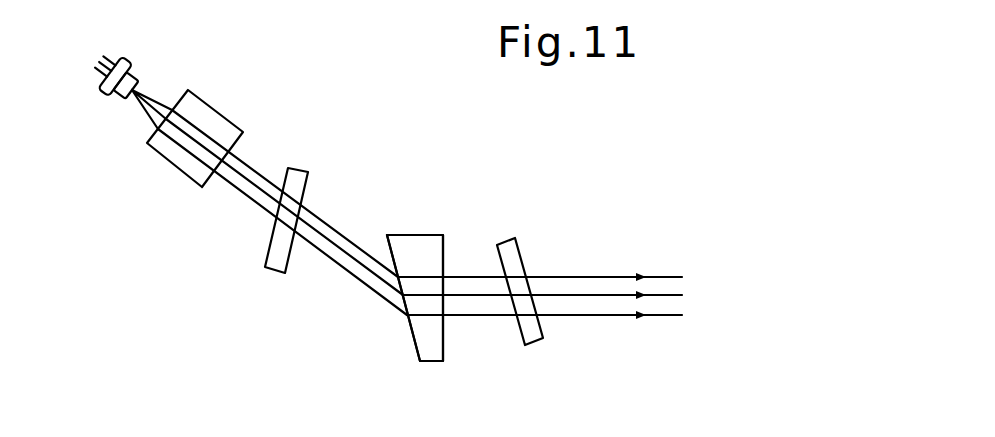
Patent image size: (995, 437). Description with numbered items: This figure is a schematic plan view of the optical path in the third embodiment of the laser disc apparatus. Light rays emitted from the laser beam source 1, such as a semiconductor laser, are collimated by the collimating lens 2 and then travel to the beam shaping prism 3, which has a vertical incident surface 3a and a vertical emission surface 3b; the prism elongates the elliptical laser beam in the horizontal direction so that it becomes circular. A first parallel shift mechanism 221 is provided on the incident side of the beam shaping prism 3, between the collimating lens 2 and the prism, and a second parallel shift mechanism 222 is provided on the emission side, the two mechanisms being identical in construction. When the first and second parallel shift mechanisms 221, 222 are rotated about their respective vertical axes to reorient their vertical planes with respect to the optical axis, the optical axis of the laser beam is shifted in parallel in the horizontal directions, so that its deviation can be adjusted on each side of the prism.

The laser beam source 1 is at (104, 93).
The collimating lens 2 is at (170, 152).
The first parallel shift mechanism 221 is at (262, 266).
The beam shaping prism 3 is at (409, 269).
The incident surface 3a is at (387, 247).
The emission surface 3b is at (445, 250).
The second parallel shift mechanism 222 is at (519, 245).